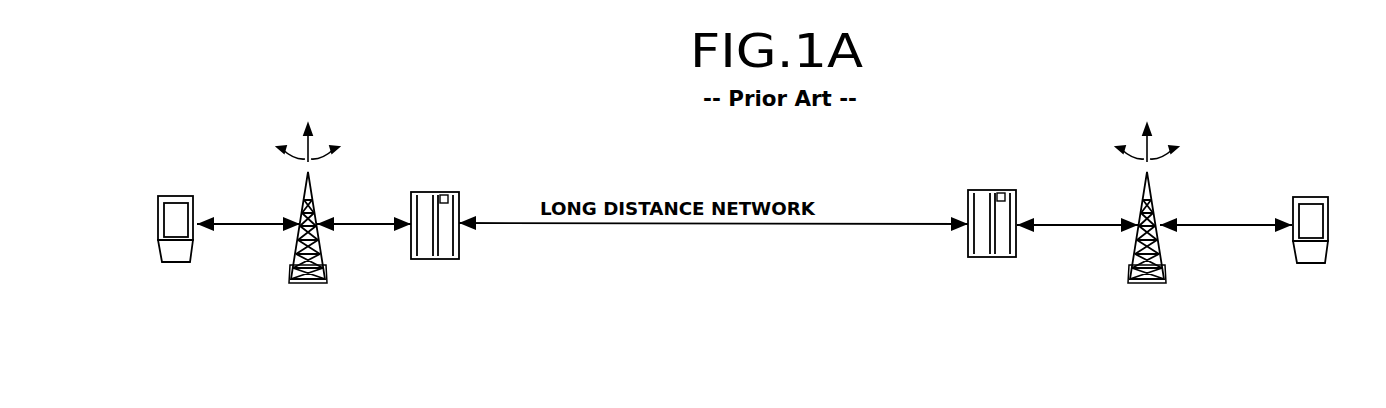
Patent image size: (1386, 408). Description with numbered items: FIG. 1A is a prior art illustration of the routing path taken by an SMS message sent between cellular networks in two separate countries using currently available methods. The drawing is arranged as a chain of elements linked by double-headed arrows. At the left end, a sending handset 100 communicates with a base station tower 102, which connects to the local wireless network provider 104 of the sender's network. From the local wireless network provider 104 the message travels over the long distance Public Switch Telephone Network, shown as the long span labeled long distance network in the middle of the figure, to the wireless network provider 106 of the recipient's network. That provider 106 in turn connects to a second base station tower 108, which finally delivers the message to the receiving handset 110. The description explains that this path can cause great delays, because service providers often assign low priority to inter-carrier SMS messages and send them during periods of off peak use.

The mobile telephone 100 is at (173, 198).
The base station tower 102 is at (318, 200).
The local wireless network provider 104 is at (428, 192).
The wireless network provider 106 is at (983, 190).
The base station tower 108 is at (1158, 207).
The mobile telephone 110 is at (1303, 197).